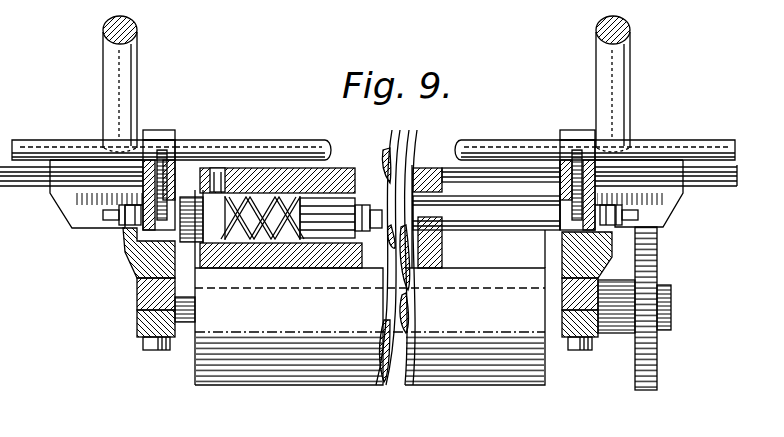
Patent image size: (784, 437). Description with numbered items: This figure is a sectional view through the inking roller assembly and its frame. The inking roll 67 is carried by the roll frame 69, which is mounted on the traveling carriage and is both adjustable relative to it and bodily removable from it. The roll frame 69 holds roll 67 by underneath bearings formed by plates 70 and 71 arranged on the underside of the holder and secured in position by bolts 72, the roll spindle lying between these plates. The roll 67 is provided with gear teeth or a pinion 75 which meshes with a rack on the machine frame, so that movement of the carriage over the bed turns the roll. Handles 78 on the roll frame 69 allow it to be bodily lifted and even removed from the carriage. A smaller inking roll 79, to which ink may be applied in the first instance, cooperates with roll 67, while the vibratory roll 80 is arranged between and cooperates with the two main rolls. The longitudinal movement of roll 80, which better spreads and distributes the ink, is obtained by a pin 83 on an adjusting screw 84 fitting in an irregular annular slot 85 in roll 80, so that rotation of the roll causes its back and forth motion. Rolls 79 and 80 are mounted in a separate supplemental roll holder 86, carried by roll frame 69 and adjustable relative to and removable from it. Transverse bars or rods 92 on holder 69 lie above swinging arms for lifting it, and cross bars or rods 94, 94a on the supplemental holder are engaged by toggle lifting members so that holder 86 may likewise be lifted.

The inking roll 67 is at (480, 372).
The roll frame 69 is at (140, 267).
The bearing plate 70 is at (138, 288).
The bearing plate 71 is at (140, 325).
The bolt 72 is at (143, 344).
The pinion 75 is at (652, 247).
The handle 78 is at (128, 82).
The inking roll 79 is at (388, 160).
The vibratory roll 80 is at (331, 200).
The pin 83 is at (228, 200).
The adjusting screw 84 is at (213, 170).
The irregular annular slot 85 is at (222, 246).
The supplemental roll holder 86 is at (165, 132).
The transverse bar 92 is at (33, 176).
The cross bar 94 is at (312, 143).
The bar extension 94a is at (33, 147).